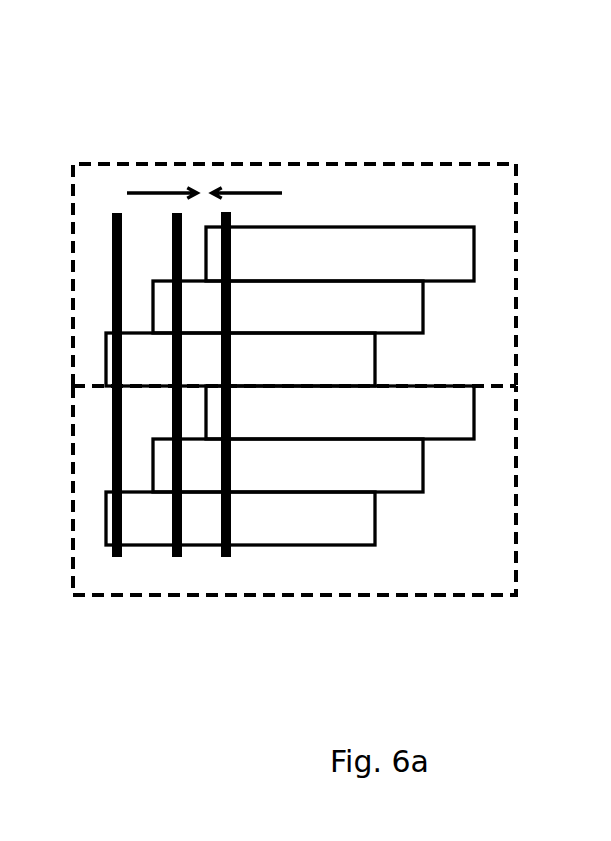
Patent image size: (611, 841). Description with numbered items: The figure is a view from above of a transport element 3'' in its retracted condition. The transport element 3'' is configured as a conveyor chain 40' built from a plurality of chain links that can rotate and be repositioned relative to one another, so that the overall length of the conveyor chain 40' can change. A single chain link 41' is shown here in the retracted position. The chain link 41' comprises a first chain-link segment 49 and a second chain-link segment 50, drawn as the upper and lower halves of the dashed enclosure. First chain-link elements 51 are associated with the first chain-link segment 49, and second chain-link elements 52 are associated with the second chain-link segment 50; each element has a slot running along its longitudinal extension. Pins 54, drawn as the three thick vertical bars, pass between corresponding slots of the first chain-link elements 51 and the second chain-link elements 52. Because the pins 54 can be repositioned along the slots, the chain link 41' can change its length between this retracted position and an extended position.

The transport element 3'' is at (319, 397).
The conveyor chain 40' is at (342, 217).
The chain link 41' is at (341, 580).
The first chain-link segment 49 is at (471, 174).
The second chain-link segment 50 is at (428, 577).
The first chain-link element 51 is at (458, 247).
The second chain-link element 52 is at (458, 422).
The pin 54 is at (113, 557).